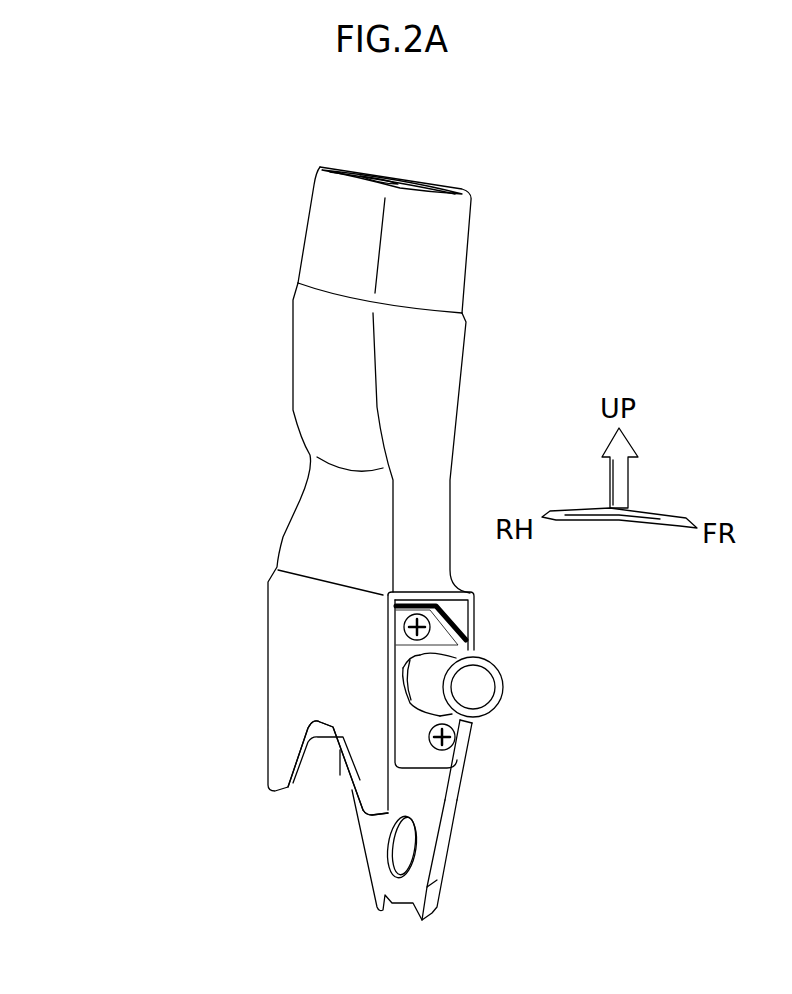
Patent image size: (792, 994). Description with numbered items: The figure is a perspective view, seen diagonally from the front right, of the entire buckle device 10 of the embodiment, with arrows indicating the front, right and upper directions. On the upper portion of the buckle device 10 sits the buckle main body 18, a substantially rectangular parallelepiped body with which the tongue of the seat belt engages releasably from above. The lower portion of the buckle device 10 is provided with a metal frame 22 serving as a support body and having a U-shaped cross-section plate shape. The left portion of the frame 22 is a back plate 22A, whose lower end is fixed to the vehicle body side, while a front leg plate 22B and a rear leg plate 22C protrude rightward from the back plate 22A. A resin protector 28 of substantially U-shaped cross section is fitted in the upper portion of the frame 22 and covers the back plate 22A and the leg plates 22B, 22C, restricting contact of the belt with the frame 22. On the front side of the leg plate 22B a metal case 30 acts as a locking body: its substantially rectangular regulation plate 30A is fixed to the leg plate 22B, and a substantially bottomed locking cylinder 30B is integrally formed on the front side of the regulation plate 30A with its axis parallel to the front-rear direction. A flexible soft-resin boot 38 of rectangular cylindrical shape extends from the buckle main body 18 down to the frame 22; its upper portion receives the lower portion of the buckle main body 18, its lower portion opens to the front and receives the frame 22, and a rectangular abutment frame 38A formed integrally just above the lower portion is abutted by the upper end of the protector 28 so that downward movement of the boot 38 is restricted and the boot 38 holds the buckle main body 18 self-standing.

The buckle device 10 is at (186, 260).
The buckle main body 18 is at (468, 257).
The boot 38 is at (293, 357).
The protector 28 is at (473, 600).
The abutment frame 38A is at (460, 604).
The case 30 is at (455, 622).
The locking cylinder 30B is at (490, 712).
The regulation plate 30A is at (417, 770).
The leg plate 22B is at (477, 762).
The frame 22 is at (437, 860).
The leg plate 22C is at (318, 738).
The back plate 22A is at (372, 860).